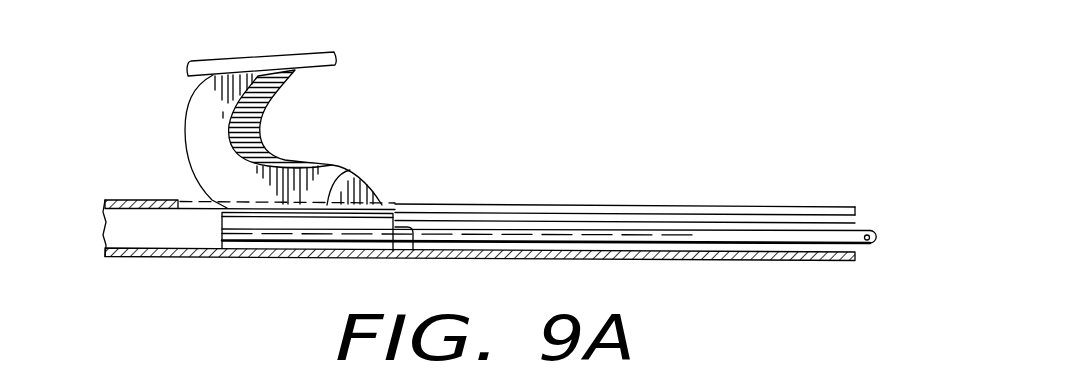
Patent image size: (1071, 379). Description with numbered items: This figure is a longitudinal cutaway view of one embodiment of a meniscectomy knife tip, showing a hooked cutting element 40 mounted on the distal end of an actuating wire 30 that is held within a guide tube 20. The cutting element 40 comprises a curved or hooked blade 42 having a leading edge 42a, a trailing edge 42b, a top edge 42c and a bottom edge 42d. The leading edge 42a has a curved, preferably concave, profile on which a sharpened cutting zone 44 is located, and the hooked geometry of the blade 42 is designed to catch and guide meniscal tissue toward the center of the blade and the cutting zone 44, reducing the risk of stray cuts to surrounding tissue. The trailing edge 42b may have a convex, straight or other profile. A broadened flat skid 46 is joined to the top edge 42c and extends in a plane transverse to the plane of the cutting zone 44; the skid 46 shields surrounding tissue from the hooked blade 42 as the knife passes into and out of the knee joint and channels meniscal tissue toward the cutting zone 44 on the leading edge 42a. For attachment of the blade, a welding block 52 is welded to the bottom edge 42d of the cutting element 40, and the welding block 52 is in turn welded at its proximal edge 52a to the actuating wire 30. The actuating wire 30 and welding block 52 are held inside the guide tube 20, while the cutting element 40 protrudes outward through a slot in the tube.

The guide tube 20 is at (735, 261).
The actuating wire 30 is at (770, 233).
The cutting element 40 is at (280, 111).
The hooked blade 42 is at (195, 133).
The leading edge 42a is at (288, 73).
The trailing edge 42b is at (188, 168).
The top edge 42c is at (210, 92).
The bottom edge 42d is at (350, 172).
The cutting zone 44 is at (263, 118).
The skid 46 is at (258, 63).
The welding block 52 is at (263, 230).
The proximal edge 52a is at (412, 232).